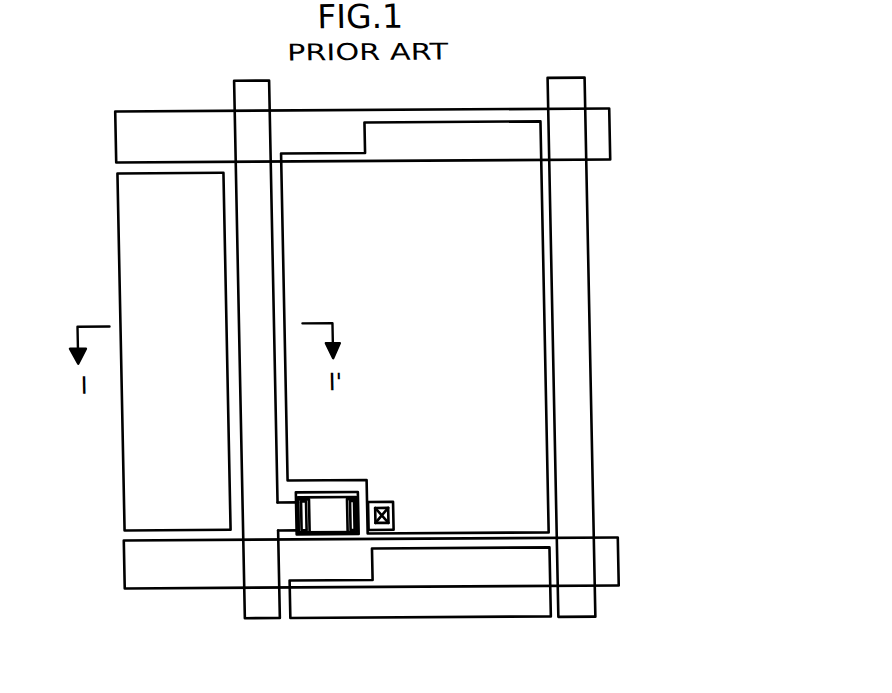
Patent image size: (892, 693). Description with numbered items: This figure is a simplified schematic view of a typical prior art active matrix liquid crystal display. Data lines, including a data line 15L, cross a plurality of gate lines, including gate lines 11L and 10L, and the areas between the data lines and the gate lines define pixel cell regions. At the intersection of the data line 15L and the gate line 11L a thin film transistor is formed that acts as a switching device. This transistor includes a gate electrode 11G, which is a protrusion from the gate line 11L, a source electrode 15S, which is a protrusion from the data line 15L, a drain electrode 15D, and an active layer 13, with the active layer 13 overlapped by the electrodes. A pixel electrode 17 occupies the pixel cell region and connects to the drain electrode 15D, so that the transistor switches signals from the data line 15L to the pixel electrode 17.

The gate line 10L is at (606, 124).
The gate line 11L is at (604, 564).
The gate electrode 11G is at (330, 490).
The active layer 13 is at (294, 512).
The data line 15L is at (274, 308).
The source electrode 15S is at (301, 640).
The drain electrode 15D is at (387, 502).
The pixel electrode 17 is at (160, 227).